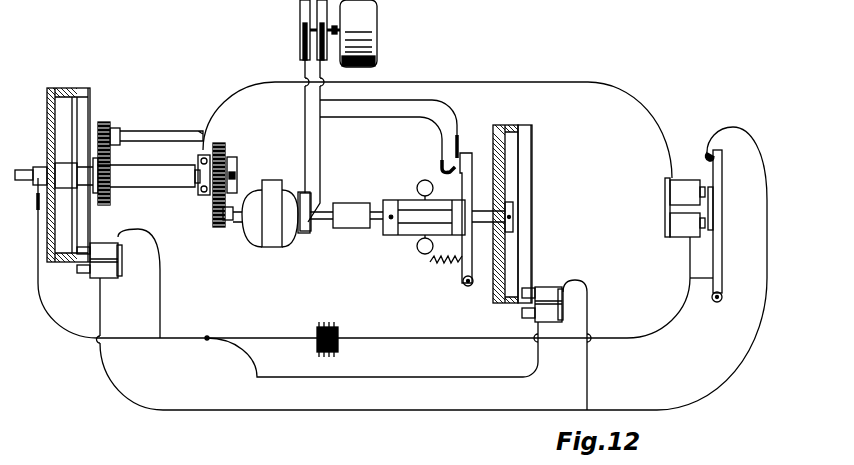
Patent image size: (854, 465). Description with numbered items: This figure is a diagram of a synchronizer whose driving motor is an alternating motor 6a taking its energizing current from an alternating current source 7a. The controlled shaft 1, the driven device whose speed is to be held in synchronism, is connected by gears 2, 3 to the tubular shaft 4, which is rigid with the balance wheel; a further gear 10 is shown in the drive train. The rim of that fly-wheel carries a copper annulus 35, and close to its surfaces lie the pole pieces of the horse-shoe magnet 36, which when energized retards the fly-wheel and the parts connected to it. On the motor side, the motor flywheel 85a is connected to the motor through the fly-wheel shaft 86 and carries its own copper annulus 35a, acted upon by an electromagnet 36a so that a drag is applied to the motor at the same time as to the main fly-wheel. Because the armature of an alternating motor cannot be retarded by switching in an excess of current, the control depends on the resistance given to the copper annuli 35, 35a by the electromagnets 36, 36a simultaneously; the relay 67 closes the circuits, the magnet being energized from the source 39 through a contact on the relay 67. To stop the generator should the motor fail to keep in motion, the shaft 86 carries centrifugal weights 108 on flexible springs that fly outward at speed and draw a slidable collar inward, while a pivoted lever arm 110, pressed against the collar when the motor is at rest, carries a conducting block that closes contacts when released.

The shaft 1 is at (166, 131).
The gear 2 is at (112, 124).
The gear 3 is at (111, 199).
The tubular shaft 4 is at (170, 187).
The alternating motor 6a is at (271, 247).
The source 7a is at (357, 33).
The gear 10 is at (225, 146).
The copper annulus 35 is at (91, 100).
The copper annulus 35a is at (536, 192).
The horse-shoe magnet 36 is at (112, 276).
The electromagnet 36a is at (549, 289).
The source 39 is at (337, 327).
The relay 67 is at (678, 237).
The motor flywheel 85a is at (503, 162).
The fly-wheel shaft 86 is at (375, 204).
The weight 108 is at (422, 252).
The lever arm 110 is at (478, 157).